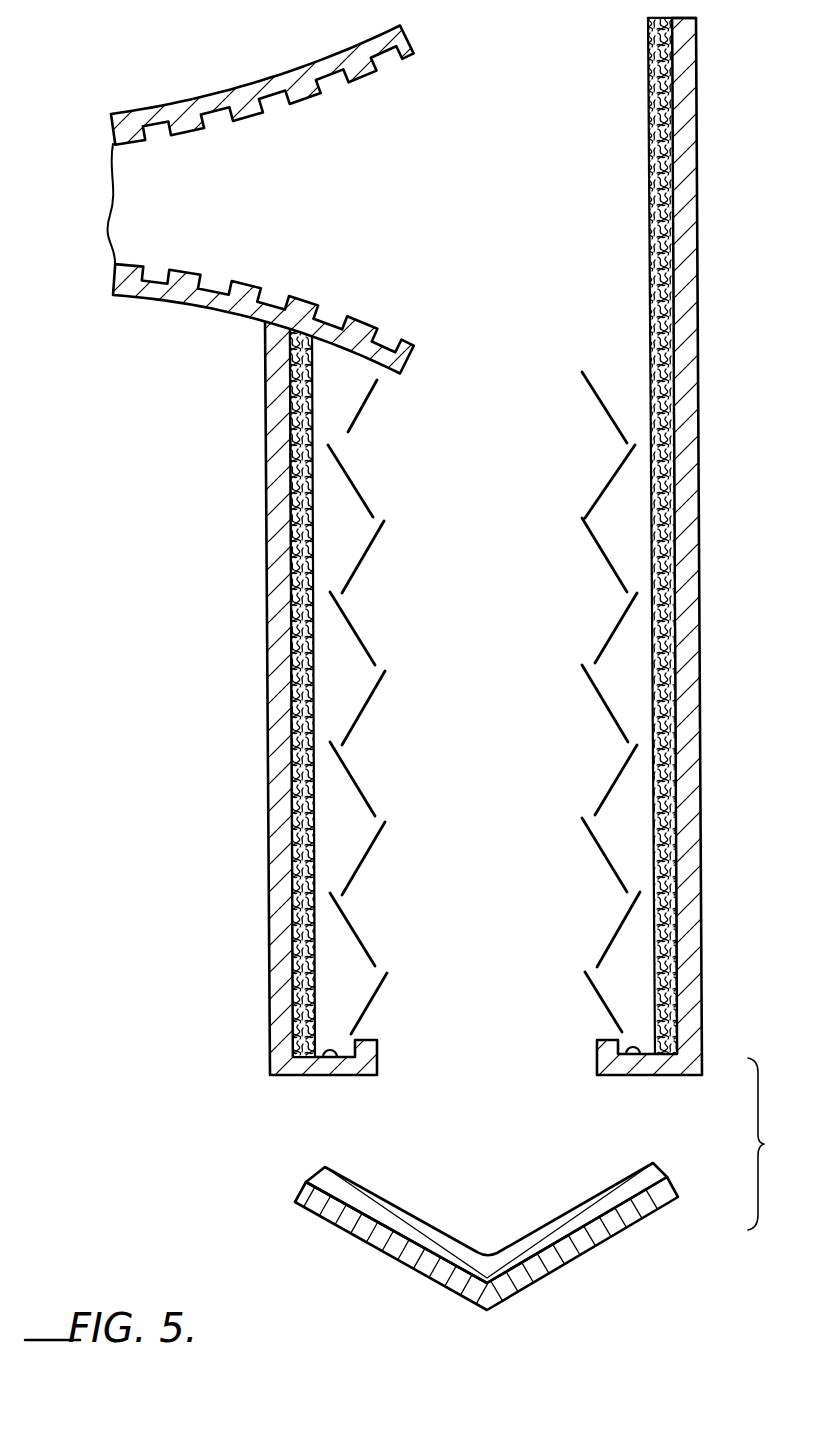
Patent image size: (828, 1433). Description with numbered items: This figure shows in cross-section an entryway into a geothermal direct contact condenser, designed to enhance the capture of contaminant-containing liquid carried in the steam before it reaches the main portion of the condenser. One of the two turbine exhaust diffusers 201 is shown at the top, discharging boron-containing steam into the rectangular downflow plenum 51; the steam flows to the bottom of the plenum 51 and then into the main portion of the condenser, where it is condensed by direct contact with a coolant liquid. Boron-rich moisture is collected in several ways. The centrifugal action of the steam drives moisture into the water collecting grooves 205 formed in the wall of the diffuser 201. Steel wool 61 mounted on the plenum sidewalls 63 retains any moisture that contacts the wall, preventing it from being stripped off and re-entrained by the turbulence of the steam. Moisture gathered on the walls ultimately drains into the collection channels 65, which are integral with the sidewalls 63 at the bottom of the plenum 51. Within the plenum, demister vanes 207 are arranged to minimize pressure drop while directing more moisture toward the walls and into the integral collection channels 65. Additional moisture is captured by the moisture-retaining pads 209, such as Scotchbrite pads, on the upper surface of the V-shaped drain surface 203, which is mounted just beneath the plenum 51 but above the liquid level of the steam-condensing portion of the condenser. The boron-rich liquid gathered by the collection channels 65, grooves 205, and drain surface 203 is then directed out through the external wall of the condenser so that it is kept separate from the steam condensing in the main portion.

The downflow plenum 51 is at (477, 570).
The steel wool 61 is at (313, 396).
The plenum sidewalls 63 is at (266, 632).
The collection channels 65 is at (332, 1050).
The turbine exhaust diffuser 201 is at (261, 200).
The V-shaped drain surface 203 is at (486, 1236).
The water collecting grooves 205 is at (324, 96).
The demister vanes 207 is at (358, 483).
The moisture-retaining pads 209 is at (413, 1215).